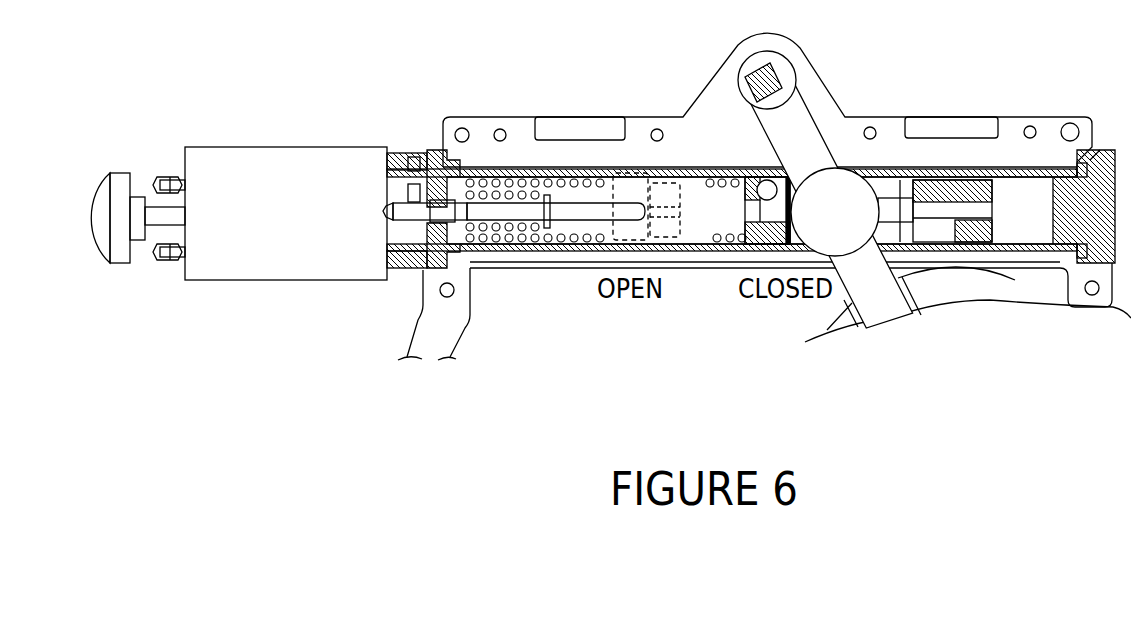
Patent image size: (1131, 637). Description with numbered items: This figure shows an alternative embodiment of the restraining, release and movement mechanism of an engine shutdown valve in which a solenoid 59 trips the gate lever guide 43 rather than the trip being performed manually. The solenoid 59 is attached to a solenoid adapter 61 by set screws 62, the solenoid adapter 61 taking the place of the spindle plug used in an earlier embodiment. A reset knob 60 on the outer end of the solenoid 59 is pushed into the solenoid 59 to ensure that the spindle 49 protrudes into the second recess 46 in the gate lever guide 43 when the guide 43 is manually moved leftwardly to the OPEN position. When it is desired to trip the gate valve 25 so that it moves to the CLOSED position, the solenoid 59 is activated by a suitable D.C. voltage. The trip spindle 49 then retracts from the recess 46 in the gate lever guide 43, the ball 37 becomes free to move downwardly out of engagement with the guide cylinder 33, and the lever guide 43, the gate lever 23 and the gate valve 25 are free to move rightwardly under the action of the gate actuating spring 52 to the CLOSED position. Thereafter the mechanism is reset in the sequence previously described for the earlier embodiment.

The gate lever 23 is at (848, 297).
The gate valve 25 is at (1020, 283).
The guide cylinder 33 is at (662, 168).
The ball 37 is at (767, 178).
The gate lever guide 43 is at (995, 197).
The second recess 46 is at (745, 208).
The spindle 49 is at (590, 203).
The gate actuating spring 52 is at (517, 178).
The solenoid 59 is at (300, 147).
The reset knob 60 is at (120, 173).
The solenoid adapter 61 is at (432, 150).
The set screws 62 is at (414, 153).